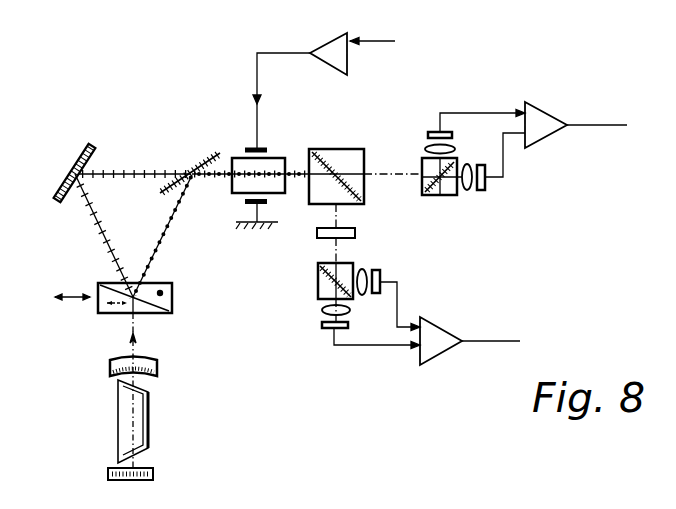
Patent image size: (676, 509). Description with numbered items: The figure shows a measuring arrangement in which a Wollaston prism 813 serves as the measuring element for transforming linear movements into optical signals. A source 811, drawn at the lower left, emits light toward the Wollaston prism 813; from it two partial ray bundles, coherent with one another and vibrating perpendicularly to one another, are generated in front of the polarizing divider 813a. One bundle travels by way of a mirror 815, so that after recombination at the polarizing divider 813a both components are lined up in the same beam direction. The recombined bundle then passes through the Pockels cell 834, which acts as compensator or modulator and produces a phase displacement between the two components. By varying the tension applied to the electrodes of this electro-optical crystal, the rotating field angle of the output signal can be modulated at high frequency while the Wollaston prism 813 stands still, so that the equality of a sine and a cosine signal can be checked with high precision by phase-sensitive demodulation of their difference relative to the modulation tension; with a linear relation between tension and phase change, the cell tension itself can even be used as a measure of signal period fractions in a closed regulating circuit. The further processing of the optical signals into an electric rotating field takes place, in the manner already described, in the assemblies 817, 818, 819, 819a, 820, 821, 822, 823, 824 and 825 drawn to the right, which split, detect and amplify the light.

The source 811 is at (102, 348).
The Wollaston prism 813 is at (172, 302).
The polarizing divider 813a is at (202, 163).
The mirror 815 is at (74, 163).
The assembly for further signal processing 817 is at (340, 152).
The assembly for further signal processing 818 is at (355, 232).
The assembly for further signal processing 819 is at (318, 281).
The assembly for further signal processing 819a is at (451, 186).
The assembly for further signal processing 820 is at (325, 331).
The assembly for further signal processing 821 is at (382, 275).
The assembly for further signal processing 822 is at (486, 180).
The assembly for further signal processing 823 is at (432, 132).
The assembly for further signal processing 824 is at (446, 348).
The assembly for further signal processing 825 is at (536, 118).
The Pockels cell 834 is at (250, 183).